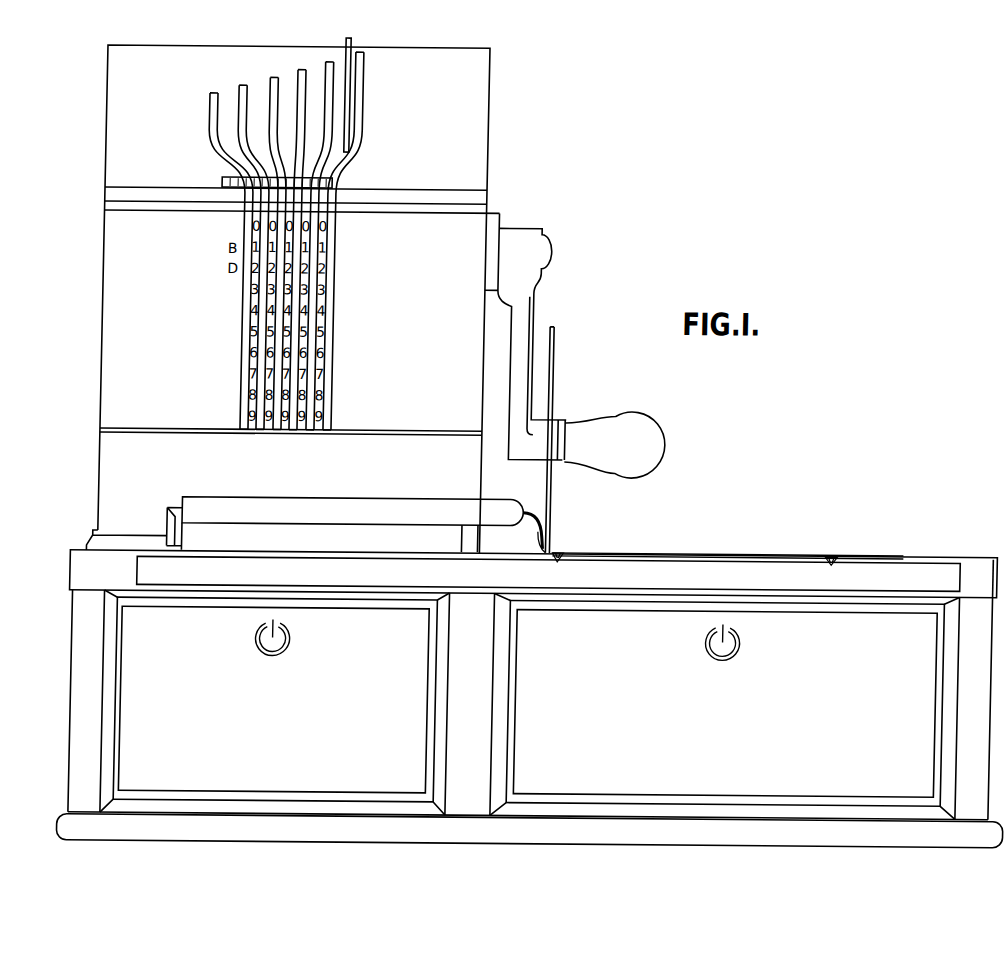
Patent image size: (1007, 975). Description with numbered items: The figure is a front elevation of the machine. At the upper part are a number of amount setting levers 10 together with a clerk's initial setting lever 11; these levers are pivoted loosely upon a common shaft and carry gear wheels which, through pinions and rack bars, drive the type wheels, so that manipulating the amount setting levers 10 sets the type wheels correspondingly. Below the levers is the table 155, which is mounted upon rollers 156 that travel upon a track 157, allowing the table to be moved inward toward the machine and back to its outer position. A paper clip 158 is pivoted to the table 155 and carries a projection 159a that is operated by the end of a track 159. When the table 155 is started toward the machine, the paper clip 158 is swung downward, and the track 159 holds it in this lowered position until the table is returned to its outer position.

The amount setting levers 10 is at (298, 68).
The clerk's initial setting lever 11 is at (210, 132).
The table 155 is at (678, 549).
The rollers 156 is at (571, 549).
The track 157 is at (534, 574).
The paper clip 158 is at (556, 477).
The track 159 is at (344, 525).
The projection 159a is at (562, 509).